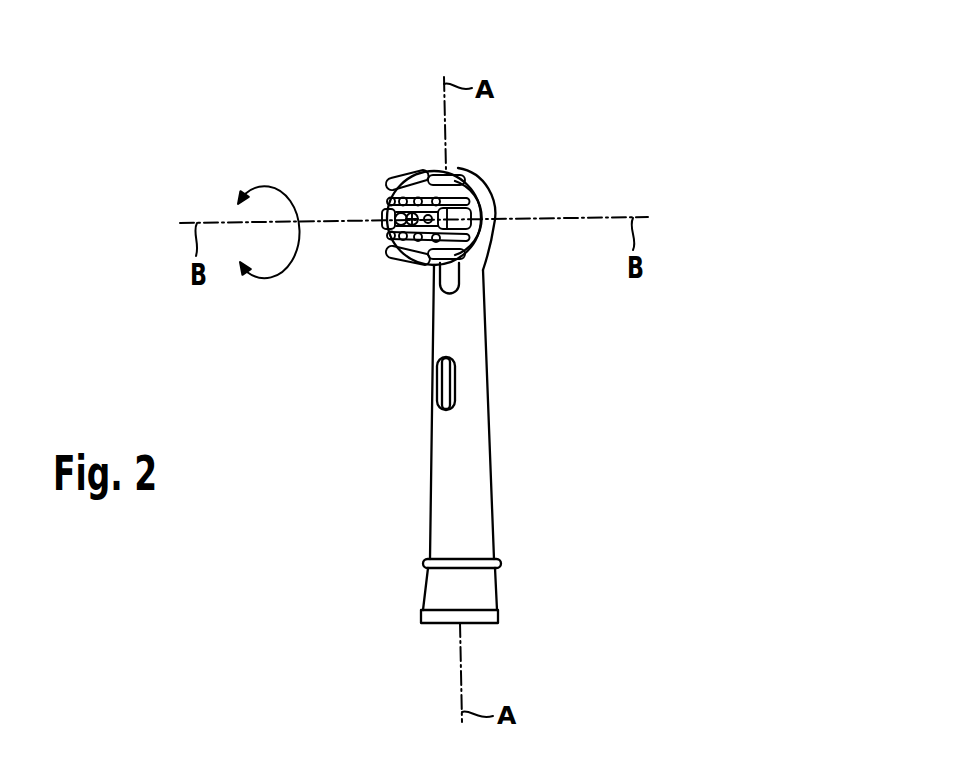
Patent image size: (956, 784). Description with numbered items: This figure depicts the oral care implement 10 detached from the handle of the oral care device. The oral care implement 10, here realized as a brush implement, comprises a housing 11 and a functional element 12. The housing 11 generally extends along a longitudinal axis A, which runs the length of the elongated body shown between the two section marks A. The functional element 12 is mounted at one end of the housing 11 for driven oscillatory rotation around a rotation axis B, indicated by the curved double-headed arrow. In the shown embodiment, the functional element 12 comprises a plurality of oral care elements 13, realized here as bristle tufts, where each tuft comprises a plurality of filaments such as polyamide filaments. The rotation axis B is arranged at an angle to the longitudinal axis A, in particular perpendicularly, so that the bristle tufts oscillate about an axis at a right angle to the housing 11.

The oral care implement 10 is at (722, 103).
The housing 11 is at (473, 472).
The functional element 12 is at (465, 179).
The oral care elements 13 is at (387, 216).